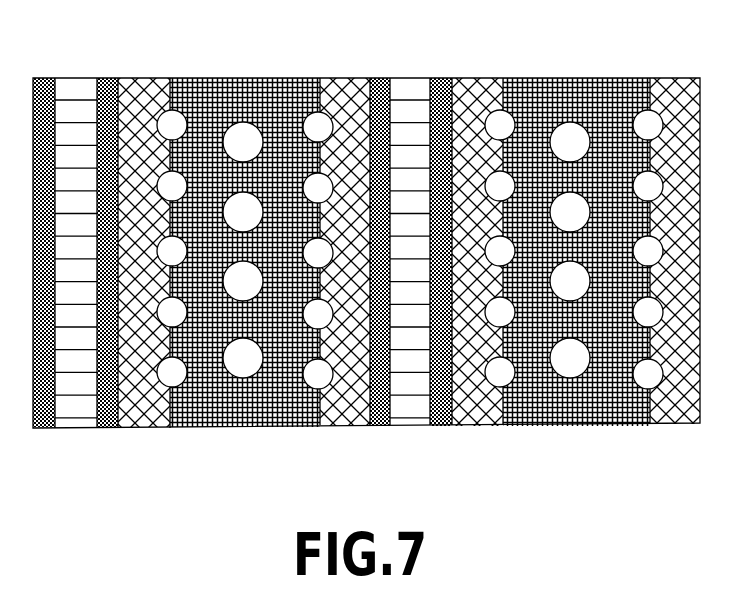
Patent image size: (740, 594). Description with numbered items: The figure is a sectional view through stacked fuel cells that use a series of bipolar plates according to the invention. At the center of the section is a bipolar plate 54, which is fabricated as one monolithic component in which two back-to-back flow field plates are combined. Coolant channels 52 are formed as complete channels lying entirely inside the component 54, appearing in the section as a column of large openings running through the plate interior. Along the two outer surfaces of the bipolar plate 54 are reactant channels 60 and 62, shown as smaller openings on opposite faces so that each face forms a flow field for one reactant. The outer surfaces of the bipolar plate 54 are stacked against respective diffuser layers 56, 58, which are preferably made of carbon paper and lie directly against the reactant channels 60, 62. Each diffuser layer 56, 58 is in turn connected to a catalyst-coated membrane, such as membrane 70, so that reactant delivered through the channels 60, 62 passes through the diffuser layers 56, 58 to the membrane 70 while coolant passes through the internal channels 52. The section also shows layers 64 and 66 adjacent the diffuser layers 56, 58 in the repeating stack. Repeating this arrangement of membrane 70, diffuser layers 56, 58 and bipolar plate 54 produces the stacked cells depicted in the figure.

The coolant channels 52 is at (578, 365).
The bipolar plate 54 is at (585, 105).
The diffuser layer 56 is at (683, 420).
The diffuser layer 58 is at (477, 407).
The reactant channels 60 is at (318, 377).
The reactant channels 62 is at (503, 377).
The conductive layer 64 is at (450, 425).
The outer layer 66 is at (348, 425).
The catalyst-coated membrane 70 is at (411, 250).